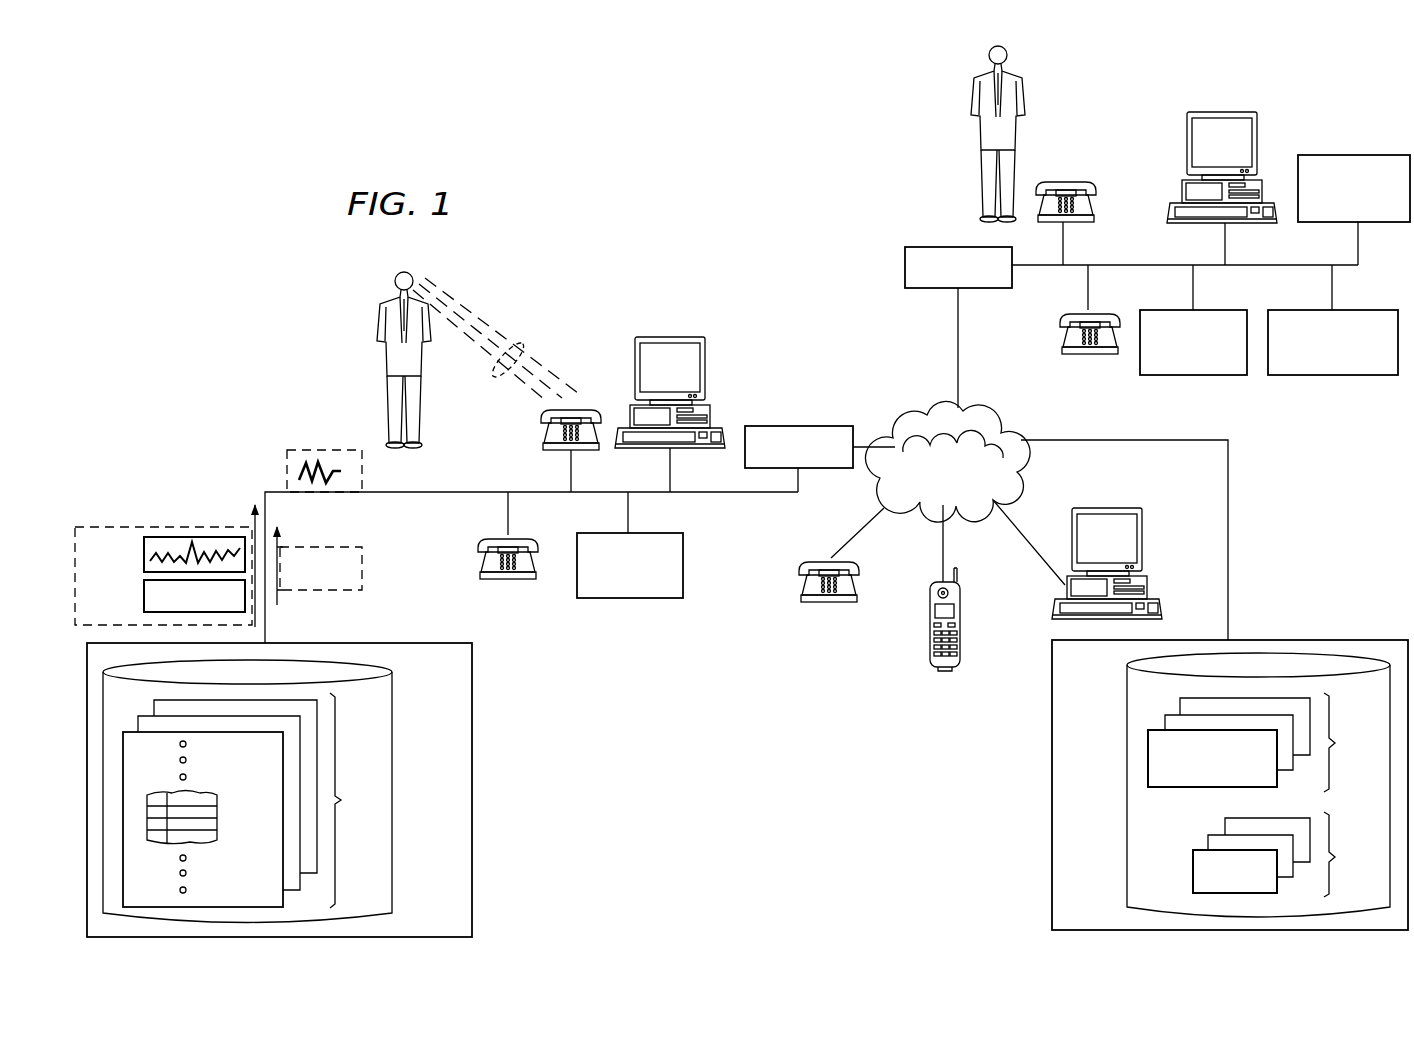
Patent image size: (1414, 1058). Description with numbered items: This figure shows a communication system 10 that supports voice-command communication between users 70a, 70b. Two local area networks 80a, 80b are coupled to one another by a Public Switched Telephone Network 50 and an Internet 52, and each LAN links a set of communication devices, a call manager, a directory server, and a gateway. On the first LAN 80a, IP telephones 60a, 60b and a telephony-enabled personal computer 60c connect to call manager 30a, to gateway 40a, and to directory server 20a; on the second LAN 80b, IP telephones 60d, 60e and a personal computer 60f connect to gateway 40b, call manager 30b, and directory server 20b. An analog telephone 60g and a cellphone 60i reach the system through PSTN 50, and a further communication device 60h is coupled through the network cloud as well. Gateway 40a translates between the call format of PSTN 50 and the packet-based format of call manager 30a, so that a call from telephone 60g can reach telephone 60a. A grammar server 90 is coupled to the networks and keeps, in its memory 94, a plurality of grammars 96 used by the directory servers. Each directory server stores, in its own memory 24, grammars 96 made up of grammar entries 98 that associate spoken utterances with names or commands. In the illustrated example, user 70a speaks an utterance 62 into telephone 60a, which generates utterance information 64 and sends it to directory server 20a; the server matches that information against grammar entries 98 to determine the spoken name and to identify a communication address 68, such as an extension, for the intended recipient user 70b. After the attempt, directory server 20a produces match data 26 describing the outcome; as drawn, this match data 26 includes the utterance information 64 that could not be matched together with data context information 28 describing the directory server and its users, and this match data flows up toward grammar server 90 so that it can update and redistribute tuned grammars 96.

The communication system 10 is at (662, 266).
The directory server 20a is at (474, 814).
The directory server 20b is at (1350, 376).
The memory 24 is at (394, 814).
The match data 26 is at (156, 525).
The data context information 28 is at (143, 590).
The call manager 30a is at (640, 599).
The call manager 30b is at (1210, 376).
The gateway 40a is at (790, 425).
The gateway 40b is at (948, 246).
The Public Switched Telephone Network 50 is at (1022, 470).
The Internet 52 is at (928, 410).
The communication device 60a is at (541, 442).
The communication device 60b is at (520, 580).
The communication device 60c is at (634, 370).
The communication device 60d is at (1073, 180).
The communication device 60e is at (1060, 348).
The communication device 60f is at (1259, 134).
The communication device 60g is at (799, 595).
The communication device 60h is at (1144, 536).
The communication device 60i is at (930, 630).
The utterance 62 is at (515, 350).
The utterance information 64 is at (312, 447).
The communication address 68 is at (363, 568).
The user 70a is at (383, 311).
The user 70b is at (976, 87).
The local area network 80a is at (435, 495).
The local area network 80b is at (1121, 264).
The grammar server 90 is at (1369, 154).
The memory 94 is at (1125, 794).
The grammar 96 is at (746, 800).
The grammar entry 98 is at (218, 816).